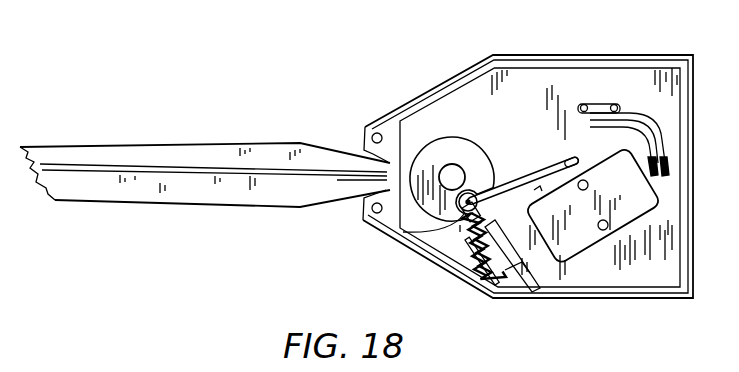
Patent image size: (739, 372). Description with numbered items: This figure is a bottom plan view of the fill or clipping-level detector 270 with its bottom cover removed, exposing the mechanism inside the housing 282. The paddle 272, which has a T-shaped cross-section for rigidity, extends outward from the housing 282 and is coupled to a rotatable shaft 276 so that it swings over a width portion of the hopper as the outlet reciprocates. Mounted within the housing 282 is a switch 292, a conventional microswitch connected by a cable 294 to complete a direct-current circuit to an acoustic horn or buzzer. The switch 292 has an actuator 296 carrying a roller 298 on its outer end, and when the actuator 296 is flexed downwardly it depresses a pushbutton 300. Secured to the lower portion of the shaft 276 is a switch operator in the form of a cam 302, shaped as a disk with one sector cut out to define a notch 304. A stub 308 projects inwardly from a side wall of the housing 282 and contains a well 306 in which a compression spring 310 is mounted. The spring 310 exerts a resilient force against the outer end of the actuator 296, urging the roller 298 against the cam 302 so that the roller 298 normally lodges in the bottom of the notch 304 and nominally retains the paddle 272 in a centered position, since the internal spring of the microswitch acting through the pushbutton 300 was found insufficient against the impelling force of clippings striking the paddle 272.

The fill or clipping-level detector 270 is at (357, 246).
The paddle 272 is at (223, 145).
The rotatable shaft 276 is at (460, 167).
The housing 282 is at (655, 80).
The switch 292 is at (610, 232).
The cable 294 is at (623, 115).
The actuator 296 is at (508, 186).
The roller 298 is at (462, 217).
The pushbutton 300 is at (560, 162).
The cam 302 is at (470, 141).
The notch 304 is at (435, 228).
The well 306 is at (522, 262).
The stub 308 is at (480, 265).
The compression spring 310 is at (513, 280).